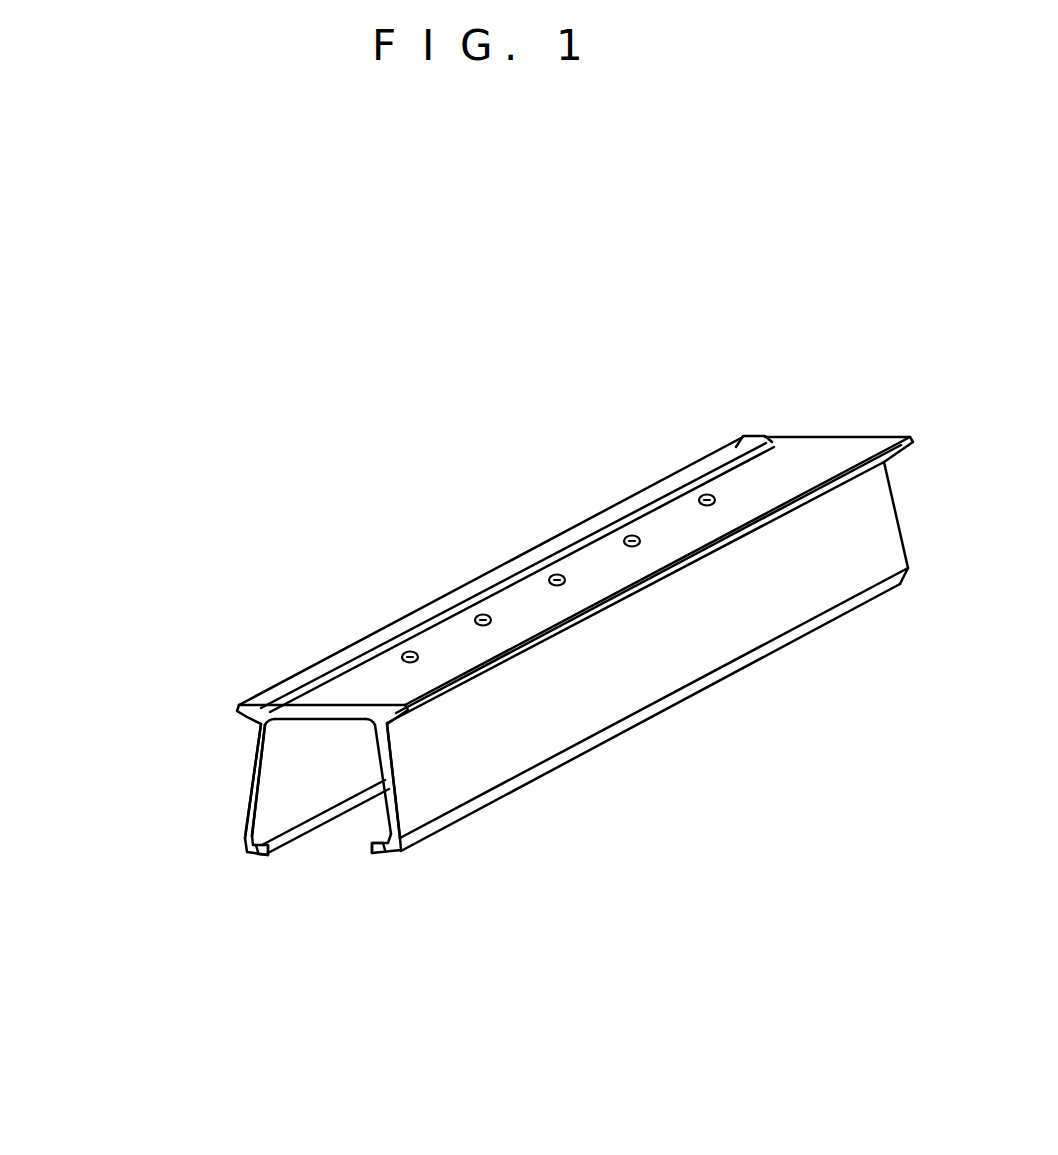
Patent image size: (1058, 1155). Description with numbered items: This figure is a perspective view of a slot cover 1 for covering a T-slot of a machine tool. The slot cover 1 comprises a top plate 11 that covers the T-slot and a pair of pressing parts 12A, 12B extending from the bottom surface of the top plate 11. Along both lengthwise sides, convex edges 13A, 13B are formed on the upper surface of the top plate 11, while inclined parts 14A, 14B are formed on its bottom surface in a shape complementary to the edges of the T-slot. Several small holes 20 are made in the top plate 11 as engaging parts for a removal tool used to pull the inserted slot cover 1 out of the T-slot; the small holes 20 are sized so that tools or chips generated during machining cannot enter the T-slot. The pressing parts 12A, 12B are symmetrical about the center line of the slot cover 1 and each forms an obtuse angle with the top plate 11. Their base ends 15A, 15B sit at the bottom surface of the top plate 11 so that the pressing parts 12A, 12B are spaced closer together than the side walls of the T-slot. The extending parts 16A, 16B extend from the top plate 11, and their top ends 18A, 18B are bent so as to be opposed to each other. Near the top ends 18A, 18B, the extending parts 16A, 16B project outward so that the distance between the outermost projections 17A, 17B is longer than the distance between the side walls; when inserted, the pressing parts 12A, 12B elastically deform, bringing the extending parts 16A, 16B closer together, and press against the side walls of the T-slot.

The slot cover 1 is at (780, 284).
The top plate 11 is at (805, 456).
The pressing part 12A is at (119, 752).
The pressing part 12B is at (606, 872).
The convex edge 13A is at (507, 565).
The convex edge 13B is at (617, 584).
The inclined part 14A is at (238, 713).
The inclined part 14B is at (391, 724).
The base end 15A is at (261, 733).
The base end 15B is at (380, 731).
The extending part 16A is at (270, 798).
The extending part 16B is at (413, 798).
The outermost projection 17A is at (254, 845).
The outermost projection 17B is at (423, 840).
The top end 18A is at (263, 858).
The top end 18B is at (386, 858).
The small holes 20 is at (408, 651).